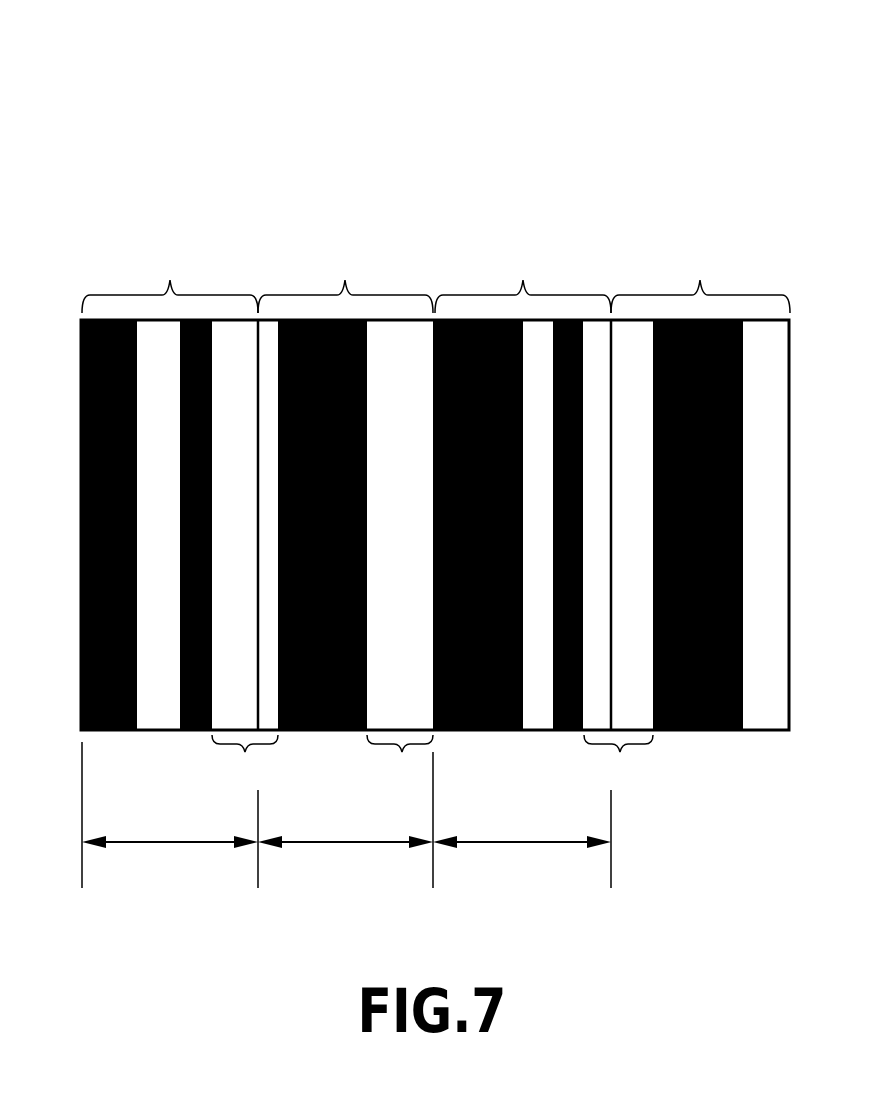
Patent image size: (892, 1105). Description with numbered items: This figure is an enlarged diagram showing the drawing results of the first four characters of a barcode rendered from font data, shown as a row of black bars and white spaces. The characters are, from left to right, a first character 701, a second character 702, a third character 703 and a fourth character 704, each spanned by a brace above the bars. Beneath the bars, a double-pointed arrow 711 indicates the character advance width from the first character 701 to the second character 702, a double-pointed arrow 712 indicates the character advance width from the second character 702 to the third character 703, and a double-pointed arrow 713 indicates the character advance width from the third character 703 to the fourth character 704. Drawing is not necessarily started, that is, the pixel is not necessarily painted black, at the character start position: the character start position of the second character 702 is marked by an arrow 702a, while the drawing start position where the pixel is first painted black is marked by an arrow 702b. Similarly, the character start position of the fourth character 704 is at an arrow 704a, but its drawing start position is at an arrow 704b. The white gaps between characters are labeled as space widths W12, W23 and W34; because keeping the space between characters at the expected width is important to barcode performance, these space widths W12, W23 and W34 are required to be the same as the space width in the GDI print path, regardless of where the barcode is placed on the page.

The first character 701 is at (169, 487).
The second character 702 is at (345, 487).
The third character 703 is at (522, 487).
The fourth character 704 is at (700, 487).
The arrow indicating character start position of second character 702a is at (258, 300).
The arrow indicating drawing start position of second character 702b is at (279, 300).
The arrow indicating character start position of fourth character 704a is at (612, 300).
The arrow indicating drawing start position of fourth character 704b is at (654, 300).
The space width W12 is at (245, 761).
The space width W23 is at (400, 761).
The space width W34 is at (618, 761).
The double-pointed arrow 711 is at (168, 842).
The double-pointed arrow 712 is at (346, 842).
The double-pointed arrow 713 is at (522, 842).